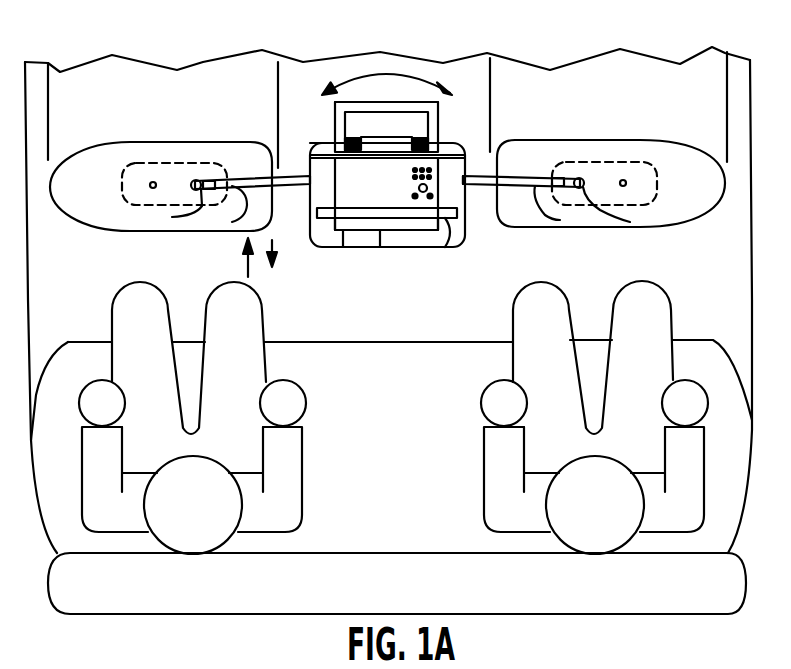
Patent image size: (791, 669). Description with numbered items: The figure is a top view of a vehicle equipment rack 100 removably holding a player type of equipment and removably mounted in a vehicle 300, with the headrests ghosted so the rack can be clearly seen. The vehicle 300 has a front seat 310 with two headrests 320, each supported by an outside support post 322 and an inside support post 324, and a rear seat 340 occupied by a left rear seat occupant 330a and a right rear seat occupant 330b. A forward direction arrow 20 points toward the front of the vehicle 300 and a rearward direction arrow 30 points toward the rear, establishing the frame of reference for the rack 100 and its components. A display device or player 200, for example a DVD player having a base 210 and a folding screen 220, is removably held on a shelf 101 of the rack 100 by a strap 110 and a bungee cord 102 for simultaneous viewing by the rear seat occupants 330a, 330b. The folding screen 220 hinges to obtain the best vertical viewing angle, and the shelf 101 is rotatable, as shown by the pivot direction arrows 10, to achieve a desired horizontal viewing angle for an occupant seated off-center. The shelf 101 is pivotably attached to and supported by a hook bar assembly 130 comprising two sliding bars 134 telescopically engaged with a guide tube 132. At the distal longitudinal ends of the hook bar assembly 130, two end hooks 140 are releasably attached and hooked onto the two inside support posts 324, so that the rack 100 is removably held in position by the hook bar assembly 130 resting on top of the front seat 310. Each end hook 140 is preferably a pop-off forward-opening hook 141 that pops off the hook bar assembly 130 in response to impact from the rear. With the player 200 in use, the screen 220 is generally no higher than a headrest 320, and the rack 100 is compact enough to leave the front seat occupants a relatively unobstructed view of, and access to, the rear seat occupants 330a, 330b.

The pivot direction arrows 10 is at (388, 72).
The forward direction arrow 20 is at (245, 268).
The rearward direction arrow 30 is at (274, 242).
The vehicle equipment rack 100 is at (490, 233).
The shelf 101 is at (466, 236).
The bungee cord 102 is at (333, 143).
The strap 110 is at (446, 230).
The hook bar assembly 130 is at (480, 158).
The guide tube 132 is at (522, 165).
The sliding bars 134 is at (232, 222).
The end hook 140 is at (192, 165).
The pop-off forward-opening hook 141 is at (172, 217).
The display device (player) 200 is at (384, 204).
The base 210 is at (340, 220).
The folding screen 220 is at (445, 128).
The vehicle 300 is at (73, 274).
The front seat 310 is at (236, 140).
The headrest 320 is at (124, 168).
The outside support post 322 is at (153, 182).
The inside support post 324 is at (203, 180).
The left rear seat occupant 330a is at (302, 473).
The right rear seat occupant 330b is at (484, 491).
The rear seat 340 is at (385, 340).